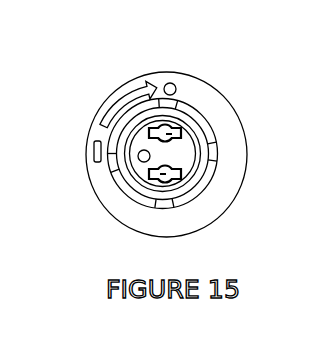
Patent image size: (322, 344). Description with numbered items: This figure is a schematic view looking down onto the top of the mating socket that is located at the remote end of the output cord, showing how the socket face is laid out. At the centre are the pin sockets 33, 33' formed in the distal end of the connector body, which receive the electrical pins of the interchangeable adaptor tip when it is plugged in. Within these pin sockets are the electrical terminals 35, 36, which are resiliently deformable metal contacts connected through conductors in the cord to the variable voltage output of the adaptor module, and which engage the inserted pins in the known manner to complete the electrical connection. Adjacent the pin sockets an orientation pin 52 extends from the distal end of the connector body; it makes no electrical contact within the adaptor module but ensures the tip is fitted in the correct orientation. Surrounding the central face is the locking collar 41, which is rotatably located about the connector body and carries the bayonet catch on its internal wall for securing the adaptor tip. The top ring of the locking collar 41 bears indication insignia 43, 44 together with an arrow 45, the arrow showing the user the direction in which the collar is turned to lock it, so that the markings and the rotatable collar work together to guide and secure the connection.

The locking collar 41 is at (231, 100).
The indication insignia 43 is at (93, 153).
The indication insignia 44 is at (170, 83).
The arrow 45 is at (120, 102).
The orientation pin 52 is at (142, 158).
The pin socket 33 is at (143, 214).
The upper contact blade opening 33' is at (191, 95).
The electrical terminal 35 is at (172, 135).
The electrical terminal 36 is at (173, 178).